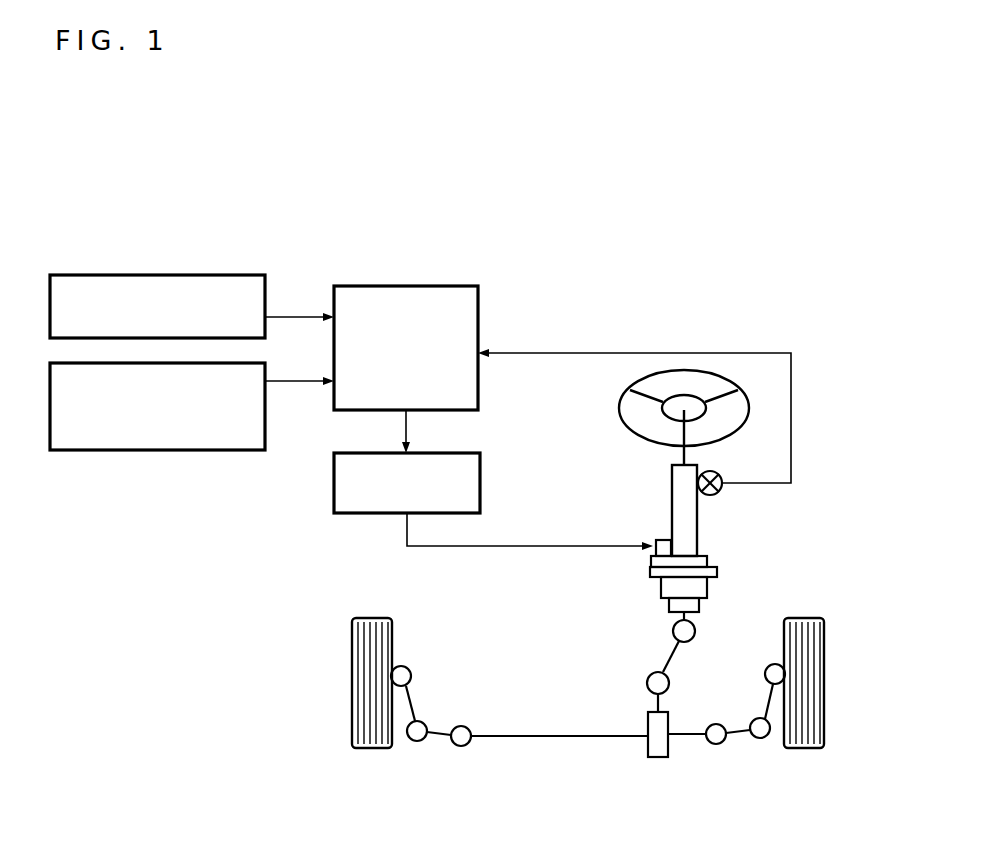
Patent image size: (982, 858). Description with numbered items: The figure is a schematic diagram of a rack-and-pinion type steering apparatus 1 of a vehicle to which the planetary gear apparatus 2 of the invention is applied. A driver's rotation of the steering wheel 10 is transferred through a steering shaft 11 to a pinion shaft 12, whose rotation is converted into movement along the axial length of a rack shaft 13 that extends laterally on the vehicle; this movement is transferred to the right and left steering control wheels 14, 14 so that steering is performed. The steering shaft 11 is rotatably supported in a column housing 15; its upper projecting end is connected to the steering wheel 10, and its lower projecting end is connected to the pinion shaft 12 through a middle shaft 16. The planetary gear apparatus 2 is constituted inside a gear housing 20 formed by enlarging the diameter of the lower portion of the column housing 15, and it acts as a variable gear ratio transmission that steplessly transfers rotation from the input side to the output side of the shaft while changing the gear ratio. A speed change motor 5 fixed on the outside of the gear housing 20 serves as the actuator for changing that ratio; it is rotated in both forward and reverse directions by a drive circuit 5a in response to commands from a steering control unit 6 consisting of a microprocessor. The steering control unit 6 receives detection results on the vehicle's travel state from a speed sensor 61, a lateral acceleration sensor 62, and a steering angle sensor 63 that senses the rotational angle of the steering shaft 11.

The steering apparatus 1 is at (556, 638).
The planetary gear apparatus 2 is at (632, 594).
The speed change motor 5 is at (660, 538).
The drive circuit 5a is at (334, 477).
The steering control unit 6 is at (420, 286).
The steering wheel 10 is at (640, 376).
The steering shaft 11 is at (690, 452).
The pinion shaft 12 is at (662, 702).
The rack shaft 13 is at (540, 735).
The steering control wheels 14 is at (370, 618).
The column housing 15 is at (698, 525).
The middle shaft 16 is at (668, 655).
The gear housing 20 is at (702, 588).
The speed sensor 61 is at (152, 275).
The lateral acceleration sensor 62 is at (172, 450).
The steering angle sensor 63 is at (725, 488).